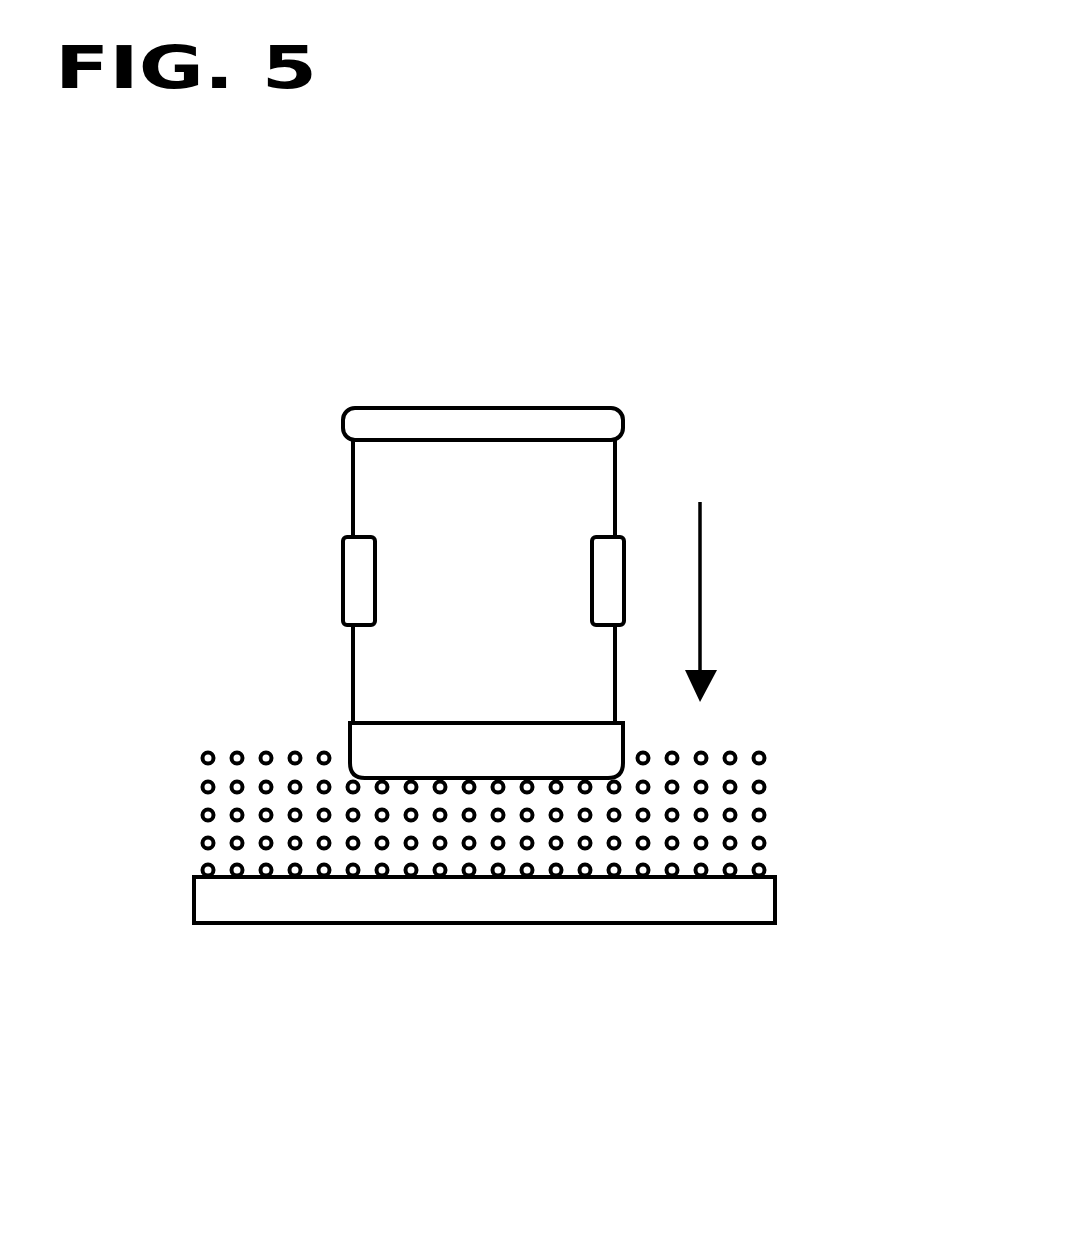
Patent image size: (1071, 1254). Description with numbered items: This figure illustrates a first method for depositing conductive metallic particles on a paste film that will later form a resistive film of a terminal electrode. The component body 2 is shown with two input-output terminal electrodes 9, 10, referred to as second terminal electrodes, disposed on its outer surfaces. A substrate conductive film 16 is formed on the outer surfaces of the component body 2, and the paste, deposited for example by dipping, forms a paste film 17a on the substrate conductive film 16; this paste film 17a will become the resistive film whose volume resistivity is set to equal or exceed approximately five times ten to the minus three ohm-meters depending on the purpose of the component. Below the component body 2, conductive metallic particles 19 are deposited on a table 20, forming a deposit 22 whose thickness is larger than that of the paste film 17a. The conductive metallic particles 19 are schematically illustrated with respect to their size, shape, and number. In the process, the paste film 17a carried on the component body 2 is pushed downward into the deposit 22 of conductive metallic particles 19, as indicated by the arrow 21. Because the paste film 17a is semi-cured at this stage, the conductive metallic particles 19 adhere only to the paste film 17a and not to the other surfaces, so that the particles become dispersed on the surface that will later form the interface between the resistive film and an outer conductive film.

The component body 2 is at (597, 470).
The input-output terminal electrode 9 is at (353, 577).
The input-output terminal electrode 10 is at (613, 572).
The substrate conductive film 16 is at (405, 415).
The paste film 17a is at (367, 747).
The conductive metallic particles 19 is at (765, 815).
The table 20 is at (582, 910).
The arrow 21 is at (700, 587).
The deposit 22 is at (765, 734).